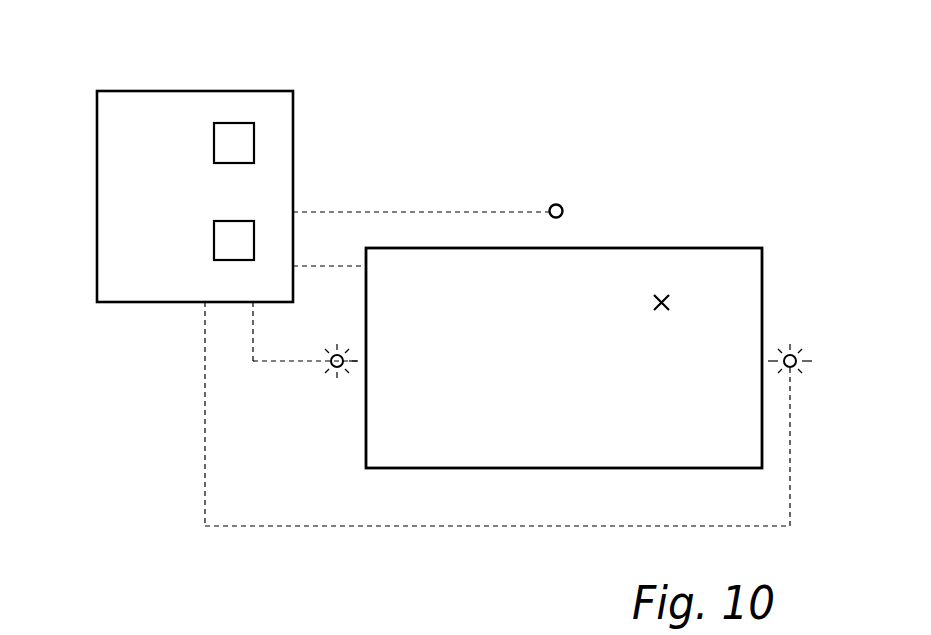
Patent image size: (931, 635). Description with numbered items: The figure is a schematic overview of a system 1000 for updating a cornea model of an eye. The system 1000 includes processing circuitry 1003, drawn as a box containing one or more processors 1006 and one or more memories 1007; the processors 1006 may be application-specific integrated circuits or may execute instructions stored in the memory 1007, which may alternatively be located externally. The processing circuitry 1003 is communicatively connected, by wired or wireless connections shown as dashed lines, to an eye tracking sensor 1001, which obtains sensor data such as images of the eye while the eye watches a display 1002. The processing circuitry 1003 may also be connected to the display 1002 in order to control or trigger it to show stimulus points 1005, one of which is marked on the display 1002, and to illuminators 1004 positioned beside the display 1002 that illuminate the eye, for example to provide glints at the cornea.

The system 1000 is at (152, 473).
The eye tracking sensor 1001 is at (554, 204).
The display 1002 is at (765, 263).
The processing circuitry 1003 is at (207, 91).
The illuminator 1004 is at (334, 368).
The stimulus point 1005 is at (665, 297).
The processor 1006 is at (243, 123).
The memory 1007 is at (213, 242).